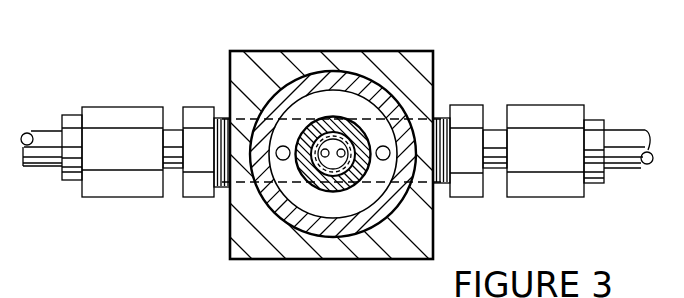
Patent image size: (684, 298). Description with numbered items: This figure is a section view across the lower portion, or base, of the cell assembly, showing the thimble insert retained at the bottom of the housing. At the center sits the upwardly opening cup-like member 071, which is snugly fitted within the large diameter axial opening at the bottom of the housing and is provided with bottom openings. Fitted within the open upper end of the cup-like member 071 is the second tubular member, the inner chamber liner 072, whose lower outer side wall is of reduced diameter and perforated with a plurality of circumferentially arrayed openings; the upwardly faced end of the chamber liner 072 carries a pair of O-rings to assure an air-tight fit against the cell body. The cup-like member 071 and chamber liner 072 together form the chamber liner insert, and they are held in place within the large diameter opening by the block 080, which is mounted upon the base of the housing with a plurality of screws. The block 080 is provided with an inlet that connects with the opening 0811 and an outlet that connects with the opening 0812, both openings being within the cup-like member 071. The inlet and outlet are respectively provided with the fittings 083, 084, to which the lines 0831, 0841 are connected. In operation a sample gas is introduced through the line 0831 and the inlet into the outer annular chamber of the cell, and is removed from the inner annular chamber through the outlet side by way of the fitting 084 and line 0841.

The cup-like member 071 is at (322, 75).
The inner chamber liner 072 is at (353, 105).
The block 080 is at (447, 78).
The opening 0811 is at (278, 158).
The opening 0812 is at (388, 158).
The fitting 083 is at (110, 113).
The line 0831 is at (40, 130).
The fitting 084 is at (523, 105).
The line 0841 is at (615, 132).